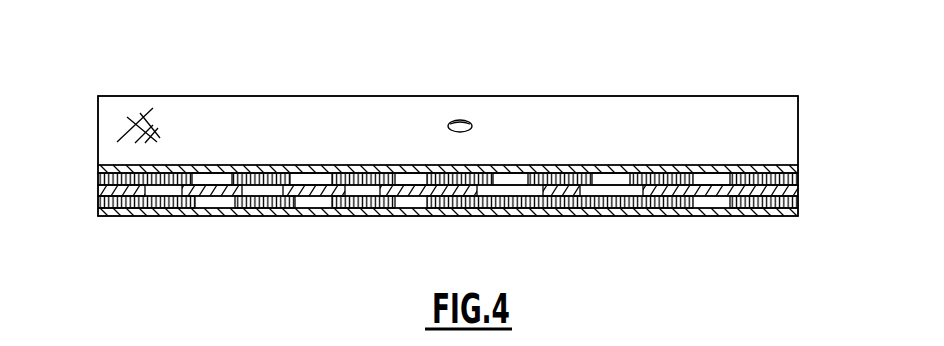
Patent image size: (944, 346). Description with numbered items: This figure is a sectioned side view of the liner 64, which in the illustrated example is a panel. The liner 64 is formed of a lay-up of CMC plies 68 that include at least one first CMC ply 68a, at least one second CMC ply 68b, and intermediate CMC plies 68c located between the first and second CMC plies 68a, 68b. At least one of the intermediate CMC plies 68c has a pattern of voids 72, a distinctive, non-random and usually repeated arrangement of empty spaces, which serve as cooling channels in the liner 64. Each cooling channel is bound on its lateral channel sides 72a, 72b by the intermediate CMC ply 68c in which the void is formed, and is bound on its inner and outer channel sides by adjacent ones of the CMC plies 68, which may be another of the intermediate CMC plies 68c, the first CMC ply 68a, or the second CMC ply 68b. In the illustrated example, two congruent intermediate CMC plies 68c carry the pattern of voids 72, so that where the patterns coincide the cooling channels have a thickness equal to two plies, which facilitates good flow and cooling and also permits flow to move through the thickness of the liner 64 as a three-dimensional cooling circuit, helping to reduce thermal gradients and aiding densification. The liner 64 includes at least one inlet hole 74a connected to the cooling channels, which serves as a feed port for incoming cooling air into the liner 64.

The liner 64 is at (170, 74).
The CMC plies 68 is at (118, 210).
The first CMC ply 68a is at (686, 115).
The second CMC ply 68b is at (709, 204).
The intermediate CMC plies 68c is at (614, 186).
The pattern of voids 72 is at (406, 209).
The lateral channel side 72a is at (305, 200).
The lateral channel side 72b is at (325, 196).
The inlet hole 74a is at (461, 119).